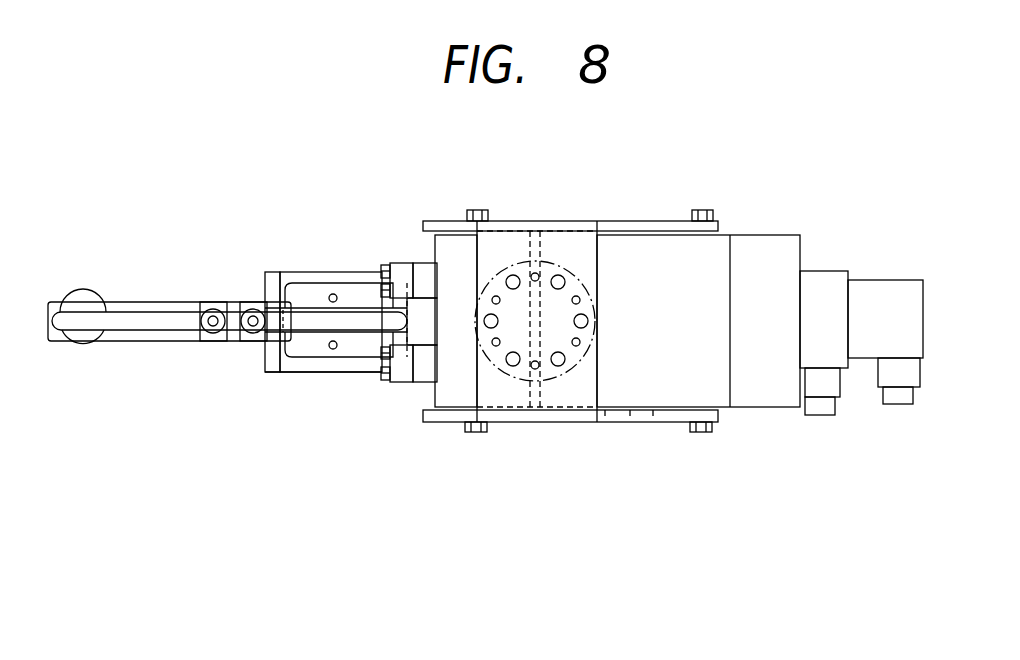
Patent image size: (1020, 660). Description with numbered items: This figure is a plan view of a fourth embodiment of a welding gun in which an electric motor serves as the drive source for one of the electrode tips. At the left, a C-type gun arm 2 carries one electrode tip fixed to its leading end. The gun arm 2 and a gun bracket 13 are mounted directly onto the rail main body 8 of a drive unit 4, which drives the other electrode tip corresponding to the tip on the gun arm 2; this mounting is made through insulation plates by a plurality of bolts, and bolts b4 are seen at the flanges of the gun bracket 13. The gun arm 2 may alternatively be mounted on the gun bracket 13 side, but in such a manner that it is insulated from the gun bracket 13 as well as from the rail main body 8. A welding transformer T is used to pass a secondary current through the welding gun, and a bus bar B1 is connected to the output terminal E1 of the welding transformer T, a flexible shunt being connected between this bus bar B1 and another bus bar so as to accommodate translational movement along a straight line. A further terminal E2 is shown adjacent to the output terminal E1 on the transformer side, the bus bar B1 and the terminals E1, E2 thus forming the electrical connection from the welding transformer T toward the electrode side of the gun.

The gun arm 2 is at (174, 318).
The drive unit 4 is at (333, 272).
The rail main body 8 is at (315, 371).
The bus bar B1 is at (398, 382).
The upper engaging block E2 is at (420, 264).
The output terminal E1 is at (423, 373).
The welding transformer T is at (460, 253).
The gun bracket 13 is at (553, 227).
The bolt b4 is at (703, 208).